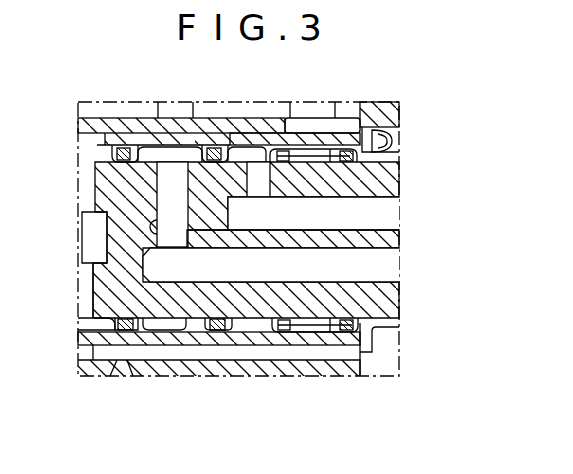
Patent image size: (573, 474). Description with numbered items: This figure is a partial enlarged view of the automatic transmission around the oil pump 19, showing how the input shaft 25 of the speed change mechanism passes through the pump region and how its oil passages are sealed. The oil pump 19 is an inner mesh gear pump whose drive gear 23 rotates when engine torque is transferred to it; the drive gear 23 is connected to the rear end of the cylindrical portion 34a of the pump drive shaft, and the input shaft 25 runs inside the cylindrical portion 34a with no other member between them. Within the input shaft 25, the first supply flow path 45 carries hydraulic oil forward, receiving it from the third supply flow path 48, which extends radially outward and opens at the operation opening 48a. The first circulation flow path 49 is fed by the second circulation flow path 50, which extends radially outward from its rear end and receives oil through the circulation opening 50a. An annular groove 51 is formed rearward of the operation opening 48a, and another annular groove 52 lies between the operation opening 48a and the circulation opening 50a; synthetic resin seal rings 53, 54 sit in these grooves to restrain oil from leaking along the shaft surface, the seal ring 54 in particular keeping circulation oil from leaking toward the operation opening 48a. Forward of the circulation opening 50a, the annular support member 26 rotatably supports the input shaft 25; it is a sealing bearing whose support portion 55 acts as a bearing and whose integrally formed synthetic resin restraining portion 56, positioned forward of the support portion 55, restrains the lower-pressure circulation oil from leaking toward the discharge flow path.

The oil pump 19 is at (425, 96).
The drive gear 23 is at (367, 106).
The input shaft 25 is at (388, 240).
The annular support member 26 is at (374, 412).
The cylindrical portion 34a is at (399, 137).
The first supply flow path 45 is at (370, 281).
The third supply flow path 48 is at (152, 228).
The operation opening 48a is at (163, 143).
The first circulation flow path 49 is at (394, 204).
The second circulation flow path 50 is at (281, 176).
The circulation opening 50a is at (272, 178).
The annular groove 51 is at (125, 169).
The annular groove 52 is at (185, 180).
The seal ring 53 is at (120, 147).
The seal ring 54 is at (209, 147).
The support portion 55 is at (322, 322).
The restraining portion 56 is at (343, 325).